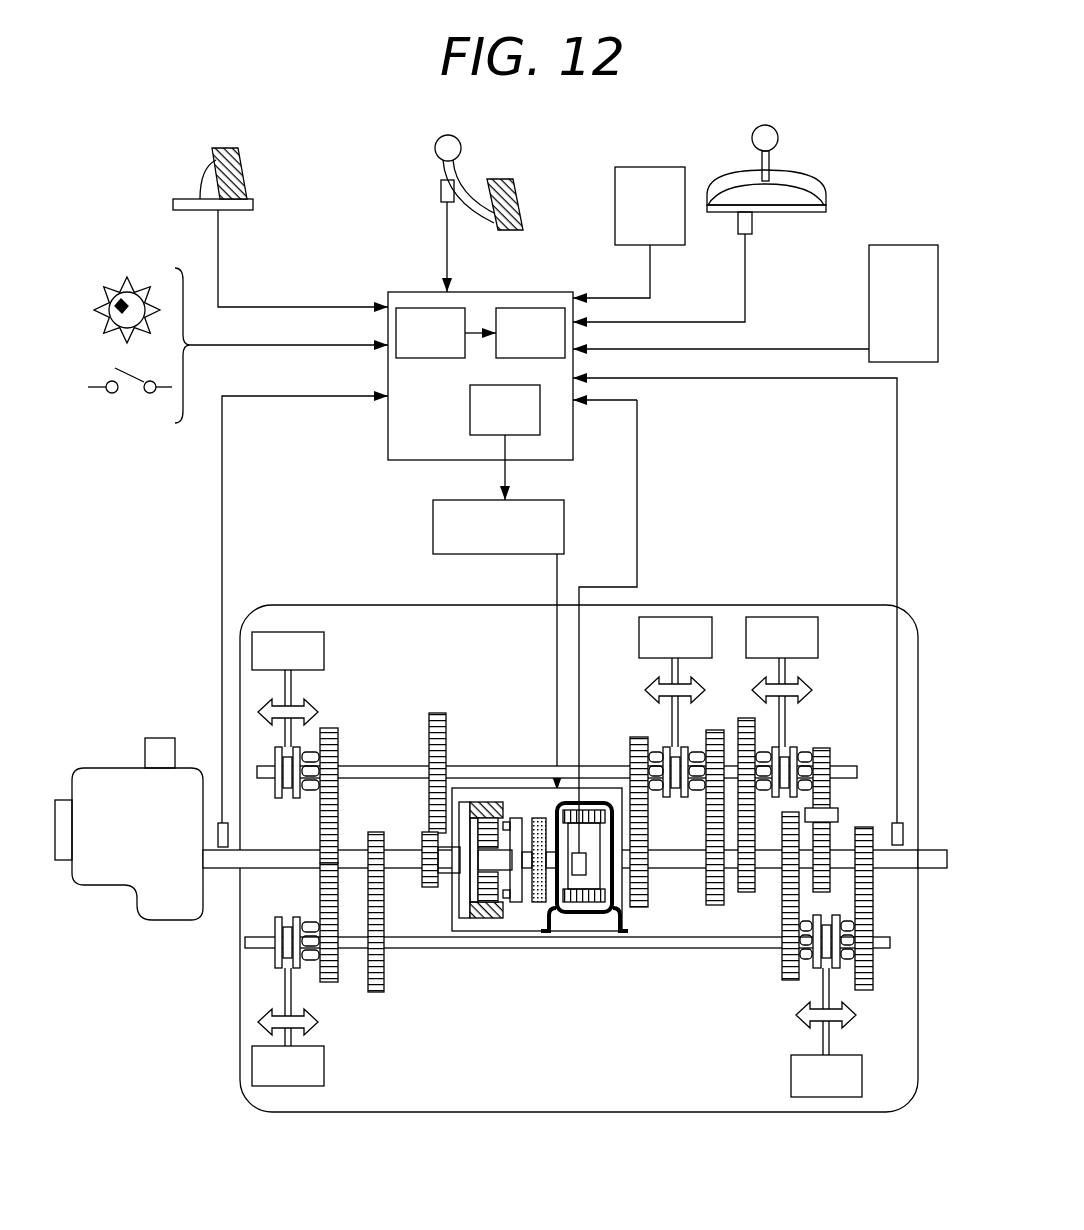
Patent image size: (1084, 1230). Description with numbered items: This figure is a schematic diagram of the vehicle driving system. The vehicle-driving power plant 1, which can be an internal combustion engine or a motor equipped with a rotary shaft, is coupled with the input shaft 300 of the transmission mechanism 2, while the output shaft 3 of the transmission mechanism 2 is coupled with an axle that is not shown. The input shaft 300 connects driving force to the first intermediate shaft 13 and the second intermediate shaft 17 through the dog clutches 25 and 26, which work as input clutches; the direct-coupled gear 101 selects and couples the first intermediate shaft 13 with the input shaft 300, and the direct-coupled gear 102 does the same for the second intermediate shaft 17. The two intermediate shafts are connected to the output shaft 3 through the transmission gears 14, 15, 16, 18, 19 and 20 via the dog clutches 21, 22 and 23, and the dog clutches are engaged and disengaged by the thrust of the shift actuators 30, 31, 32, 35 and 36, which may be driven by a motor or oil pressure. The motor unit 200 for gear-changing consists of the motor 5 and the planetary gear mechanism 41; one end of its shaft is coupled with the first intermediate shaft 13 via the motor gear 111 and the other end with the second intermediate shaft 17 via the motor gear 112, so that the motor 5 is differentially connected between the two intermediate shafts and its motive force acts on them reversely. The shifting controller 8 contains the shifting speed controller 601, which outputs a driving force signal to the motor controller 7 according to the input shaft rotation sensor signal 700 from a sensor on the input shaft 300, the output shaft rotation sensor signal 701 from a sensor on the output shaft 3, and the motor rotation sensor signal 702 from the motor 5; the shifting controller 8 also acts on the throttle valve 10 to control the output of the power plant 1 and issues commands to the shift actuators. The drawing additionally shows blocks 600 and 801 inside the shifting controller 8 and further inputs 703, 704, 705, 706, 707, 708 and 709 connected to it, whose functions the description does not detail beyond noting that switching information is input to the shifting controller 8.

The vehicle-driving power plant 1 is at (110, 890).
The transmission mechanism 2 is at (341, 605).
The output shaft 3 is at (926, 868).
The motor 5 is at (592, 803).
The motor controller 7 is at (433, 516).
The shifting controller 8 is at (555, 292).
The throttle valve 10 is at (155, 738).
The first intermediate shaft 13 is at (390, 766).
The transmission gear 14 is at (639, 737).
The transmission gear 15 is at (715, 730).
The transmission gear 16 is at (745, 718).
The second intermediate shaft 17 is at (650, 948).
The transmission gear 18 is at (788, 980).
The transmission gear 19 is at (864, 990).
The transmission gear 20 is at (830, 766).
The dog clutch 21 is at (672, 797).
The dog clutch 22 is at (790, 752).
The dog clutch 23 is at (818, 910).
The dog clutch 25 is at (282, 798).
The dog clutch 26 is at (283, 917).
The shift actuator 30 is at (675, 682).
The shift actuator 31 is at (782, 682).
The shift actuator 32 is at (826, 1032).
The shift actuator 35 is at (288, 689).
The shift actuator 36 is at (288, 1027).
The planetary gear mechanism 41 is at (480, 802).
The direct-coupled gear 101 is at (325, 728).
The direct-coupled gear 102 is at (328, 982).
The motor gear 111 is at (437, 713).
The motor gear 112 is at (376, 992).
The motor unit 200 is at (526, 788).
The input shaft 300 is at (226, 870).
The controller block 600 is at (530, 333).
The shifting speed controller 601 is at (505, 442).
The input shaft rotation sensor signal 700 is at (220, 823).
The output shaft rotation sensor signal 701 is at (902, 823).
The motor rotation sensor signal 702 is at (584, 912).
The brake pedal 703 is at (240, 150).
The accelerator pedal sensor 704 is at (441, 194).
The shift lever sensor 705 is at (756, 222).
The ignition key switch 706 is at (129, 280).
The switch 707 is at (130, 402).
The controller 708 is at (755, 303).
The controller 709 is at (629, 232).
The controller block 801 is at (446, 333).